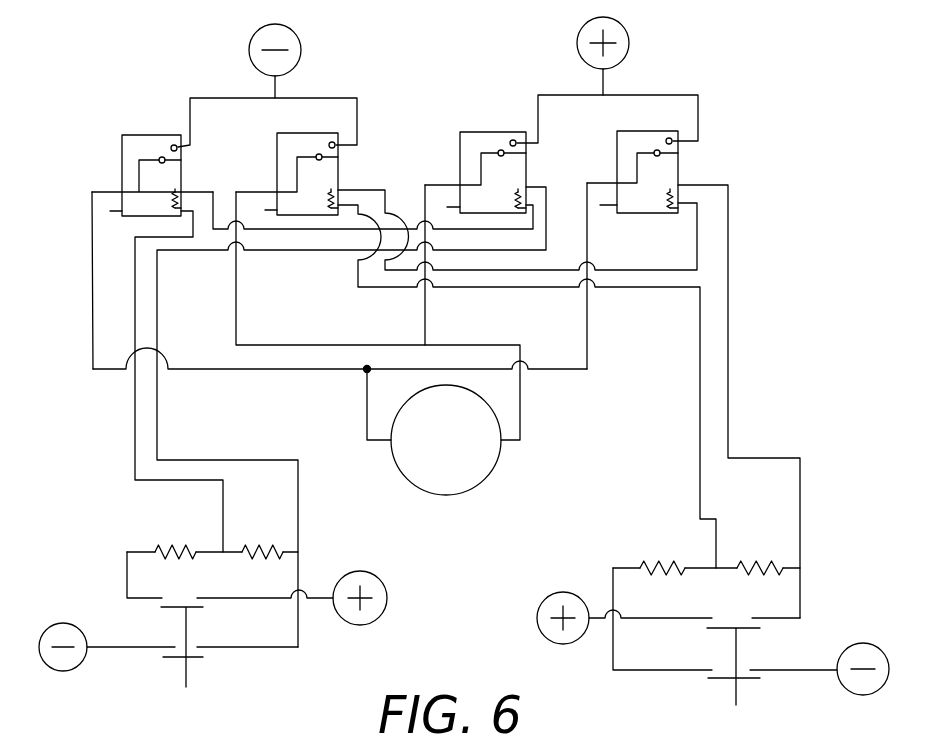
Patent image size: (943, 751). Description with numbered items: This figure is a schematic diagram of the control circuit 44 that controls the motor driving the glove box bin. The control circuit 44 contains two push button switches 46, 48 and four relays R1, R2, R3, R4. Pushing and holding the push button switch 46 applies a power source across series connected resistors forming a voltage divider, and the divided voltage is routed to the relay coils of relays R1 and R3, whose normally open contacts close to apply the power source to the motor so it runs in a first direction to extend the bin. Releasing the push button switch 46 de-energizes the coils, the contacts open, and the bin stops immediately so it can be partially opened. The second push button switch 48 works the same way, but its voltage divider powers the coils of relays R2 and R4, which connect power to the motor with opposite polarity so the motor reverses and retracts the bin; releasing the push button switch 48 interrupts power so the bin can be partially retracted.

The relay R1 is at (173, 192).
The relay R2 is at (329, 192).
The relay R3 is at (516, 192).
The relay R4 is at (668, 192).
The control circuit 44 is at (748, 300).
The push button switch 46 is at (225, 662).
The push button switch 48 is at (757, 683).